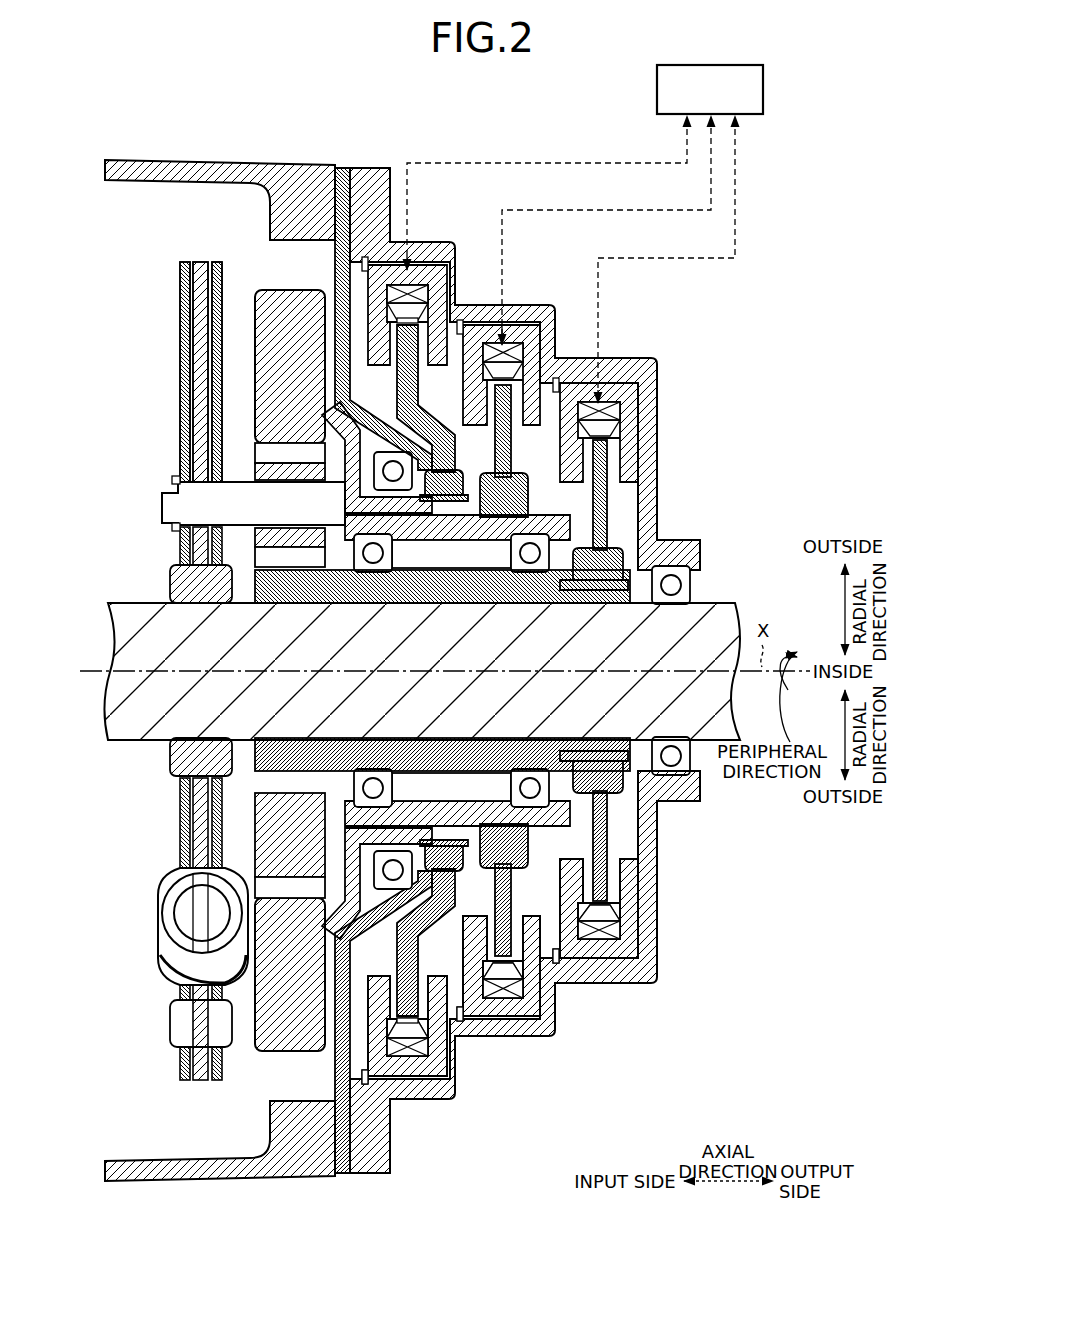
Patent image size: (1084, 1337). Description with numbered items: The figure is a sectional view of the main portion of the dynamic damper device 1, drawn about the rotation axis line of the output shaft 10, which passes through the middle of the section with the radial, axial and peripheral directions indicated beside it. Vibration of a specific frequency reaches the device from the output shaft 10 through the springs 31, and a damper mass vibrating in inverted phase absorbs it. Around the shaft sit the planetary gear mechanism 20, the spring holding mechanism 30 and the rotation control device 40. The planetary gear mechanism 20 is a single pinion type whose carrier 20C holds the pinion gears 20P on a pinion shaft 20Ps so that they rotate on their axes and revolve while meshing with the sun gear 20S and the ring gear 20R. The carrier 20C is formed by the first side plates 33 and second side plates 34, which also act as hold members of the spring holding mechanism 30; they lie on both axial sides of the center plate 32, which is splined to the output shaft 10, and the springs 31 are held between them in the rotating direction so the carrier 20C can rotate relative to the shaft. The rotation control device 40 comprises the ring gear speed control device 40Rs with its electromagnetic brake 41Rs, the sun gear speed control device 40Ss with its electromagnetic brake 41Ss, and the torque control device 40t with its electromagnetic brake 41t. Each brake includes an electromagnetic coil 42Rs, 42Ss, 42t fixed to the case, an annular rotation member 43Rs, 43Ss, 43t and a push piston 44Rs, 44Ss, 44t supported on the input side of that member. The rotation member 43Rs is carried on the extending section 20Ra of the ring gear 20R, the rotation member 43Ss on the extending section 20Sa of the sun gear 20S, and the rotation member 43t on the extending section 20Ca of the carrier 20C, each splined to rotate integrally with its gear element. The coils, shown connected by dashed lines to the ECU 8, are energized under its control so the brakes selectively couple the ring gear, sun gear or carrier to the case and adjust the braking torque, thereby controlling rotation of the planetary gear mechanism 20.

The dynamic damper device 1 is at (453, 131).
The ECU 8 is at (766, 88).
The output shaft 10 is at (132, 598).
The planetary gear mechanism 20 is at (268, 284).
The ring gear 20R is at (285, 284).
The carrier 20C is at (130, 282).
The first side plates 33 is at (180, 302).
The second side plates 34 is at (180, 342).
The pinion gears 20P is at (289, 460).
The pinion shaft 20Ps is at (230, 494).
The sun gear 20S is at (290, 562).
The extending section of the ring gear 20Ra is at (420, 496).
The extending section of the carrier 20Ca is at (457, 518).
The extending section of the sun gear 20Sa is at (473, 590).
The spring holding mechanism 30 is at (152, 1066).
The springs 31 is at (168, 908).
The center plate 32 is at (197, 830).
The rotation control device 40 is at (680, 1050).
The electromagnetic brake 41Rs is at (456, 1110).
The ring gear speed control device 40Rs is at (437, 1078).
The electromagnetic coil 42Rs is at (445, 1055).
The rotation member 43Rs is at (400, 962).
The push piston 44Rs is at (425, 1008).
The electromagnetic brake 41t is at (531, 1050).
The torque control device 40t is at (516, 1017).
The electromagnetic coil 42t is at (553, 975).
The rotation member 43t is at (545, 880).
The push piston 44t is at (493, 975).
The electromagnetic brake 41Ss is at (665, 898).
The sun gear speed control device 40Ss is at (659, 911).
The electromagnetic coil 42Ss is at (618, 930).
The rotation member 43Ss is at (605, 800).
The push piston 44Ss is at (600, 845).